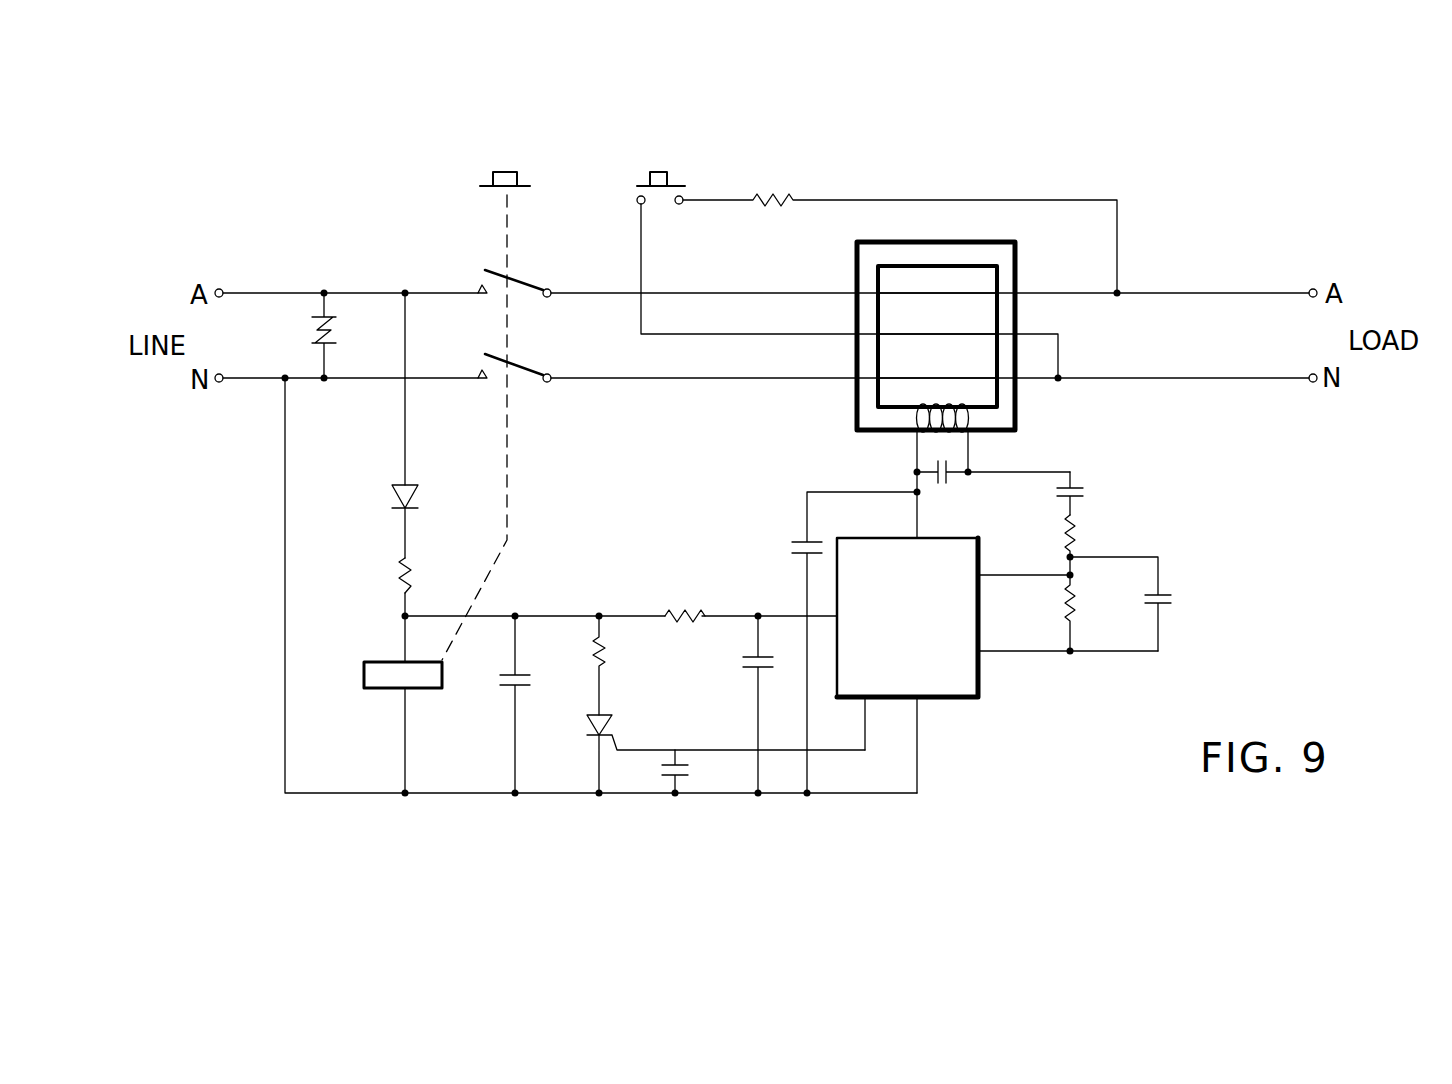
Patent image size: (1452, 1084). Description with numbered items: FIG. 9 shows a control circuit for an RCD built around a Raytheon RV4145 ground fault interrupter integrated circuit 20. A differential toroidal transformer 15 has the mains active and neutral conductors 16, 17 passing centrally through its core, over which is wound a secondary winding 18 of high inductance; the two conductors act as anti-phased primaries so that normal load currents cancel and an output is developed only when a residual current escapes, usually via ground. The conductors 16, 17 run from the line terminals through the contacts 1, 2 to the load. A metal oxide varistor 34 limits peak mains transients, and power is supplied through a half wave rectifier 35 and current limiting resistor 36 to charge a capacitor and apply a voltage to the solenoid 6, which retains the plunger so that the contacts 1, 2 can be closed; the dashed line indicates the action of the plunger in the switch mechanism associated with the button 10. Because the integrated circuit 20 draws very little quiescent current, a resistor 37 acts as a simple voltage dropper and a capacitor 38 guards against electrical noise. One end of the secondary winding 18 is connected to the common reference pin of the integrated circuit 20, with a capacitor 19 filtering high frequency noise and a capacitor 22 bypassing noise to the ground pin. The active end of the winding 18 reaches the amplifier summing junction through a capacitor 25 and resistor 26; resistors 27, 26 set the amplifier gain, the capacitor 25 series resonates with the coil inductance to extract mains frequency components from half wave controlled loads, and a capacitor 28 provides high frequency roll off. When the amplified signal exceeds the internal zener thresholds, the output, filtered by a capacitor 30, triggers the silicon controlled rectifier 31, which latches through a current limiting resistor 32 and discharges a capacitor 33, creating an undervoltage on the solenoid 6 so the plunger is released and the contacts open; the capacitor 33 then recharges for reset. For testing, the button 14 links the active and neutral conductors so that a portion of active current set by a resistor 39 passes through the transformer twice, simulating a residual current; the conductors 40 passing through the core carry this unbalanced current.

The contacts 1 is at (482, 370).
The contacts 2 is at (485, 354).
The solenoid 6 is at (378, 690).
The reset push button 10 is at (507, 168).
The button 14 is at (677, 168).
The differential toroidal transformer 15 is at (1003, 408).
The mains active conductor 16 is at (1228, 292).
The mains neutral conductor 17 is at (1232, 377).
The secondary winding 18 is at (915, 418).
The capacitor 19 is at (952, 483).
The ground fault interrupter integrated circuit 20 is at (952, 689).
The capacitor 22 is at (797, 537).
The capacitor 25 is at (1085, 492).
The resistor 26 is at (1078, 527).
The resistor 27 is at (1075, 598).
The capacitor 28 is at (1173, 602).
The capacitor 30 is at (667, 783).
The silicon controlled rectifier 31 is at (595, 735).
The current limiting resistor 32 is at (592, 633).
The capacitor 33 is at (505, 690).
The metal oxide varistor 34 is at (345, 310).
The half wave rectifier 35 is at (392, 497).
The current limiting resistor 36 is at (392, 575).
The resistor 37 is at (686, 607).
The capacitor 38 is at (752, 652).
The resistor 39 is at (778, 190).
The line conductors through core 40 is at (905, 333).